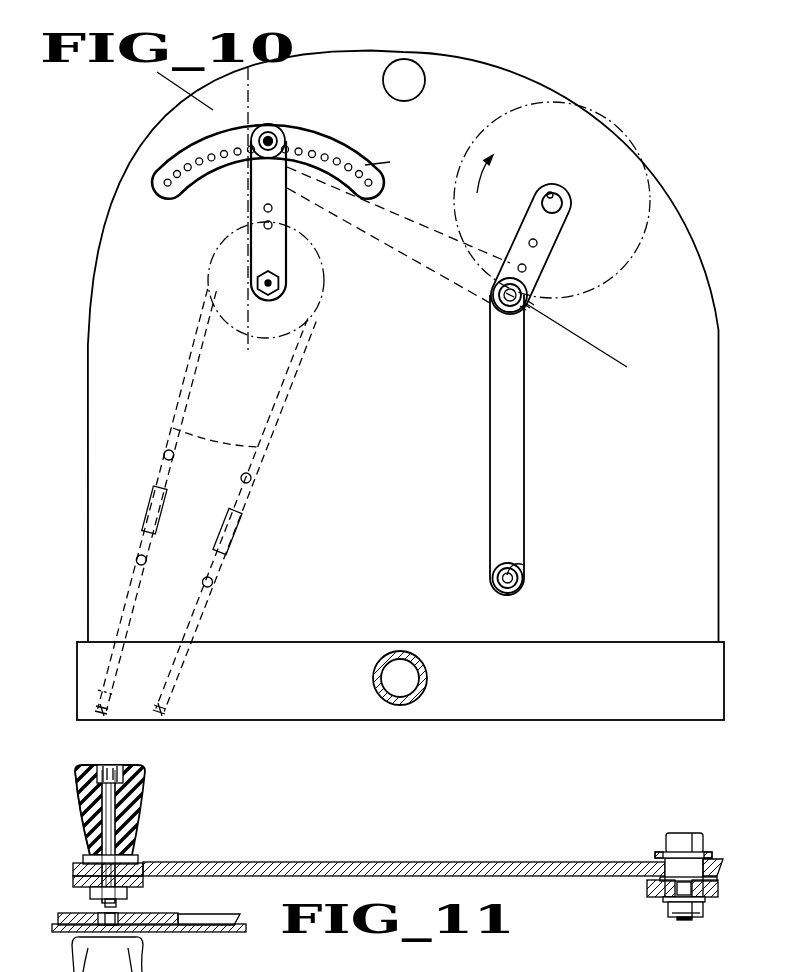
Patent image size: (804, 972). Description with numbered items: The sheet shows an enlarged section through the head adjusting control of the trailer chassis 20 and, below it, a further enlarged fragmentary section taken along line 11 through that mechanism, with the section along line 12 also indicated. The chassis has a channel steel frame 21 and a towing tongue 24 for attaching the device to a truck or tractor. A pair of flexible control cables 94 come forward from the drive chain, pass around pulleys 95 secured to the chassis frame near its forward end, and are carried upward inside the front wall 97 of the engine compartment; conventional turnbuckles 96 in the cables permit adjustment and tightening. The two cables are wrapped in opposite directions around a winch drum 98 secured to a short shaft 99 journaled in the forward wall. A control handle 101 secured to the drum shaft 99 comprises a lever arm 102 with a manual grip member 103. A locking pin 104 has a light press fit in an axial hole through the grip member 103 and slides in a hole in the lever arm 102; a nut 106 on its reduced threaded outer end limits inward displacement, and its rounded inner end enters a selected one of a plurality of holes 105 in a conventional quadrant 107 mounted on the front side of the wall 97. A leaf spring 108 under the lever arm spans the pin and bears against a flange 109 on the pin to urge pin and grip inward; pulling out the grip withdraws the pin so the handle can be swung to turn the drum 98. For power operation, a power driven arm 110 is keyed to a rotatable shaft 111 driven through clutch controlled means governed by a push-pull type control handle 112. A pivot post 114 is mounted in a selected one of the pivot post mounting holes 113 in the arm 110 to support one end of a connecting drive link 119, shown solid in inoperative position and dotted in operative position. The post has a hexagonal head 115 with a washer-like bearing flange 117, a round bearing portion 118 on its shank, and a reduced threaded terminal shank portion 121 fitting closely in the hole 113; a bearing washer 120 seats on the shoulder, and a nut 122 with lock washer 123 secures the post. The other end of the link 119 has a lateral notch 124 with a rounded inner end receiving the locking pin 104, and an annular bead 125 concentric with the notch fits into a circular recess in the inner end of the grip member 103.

In FIG. 10, the section line 11— 11 is at (183, 96).
In FIG. 10, the section line 12— 12 is at (238, 73).
In FIG. 10, the trailer chassis 20 is at (371, 404).
In FIG. 10, the channel steel frame 21 is at (657, 690).
In FIG. 10, the towing tongue 24 is at (372, 681).
In FIG. 10, the flexible control cables 94 is at (173, 417).
In FIG. 10, the pulleys 95 is at (160, 693).
In FIG. 10, the turnbuckles 96 is at (208, 518).
In FIG. 10, the front wall of the engine compartment 97 is at (388, 552).
In FIG. 11, the front wall of the engine compartment 97 is at (198, 930).
In FIG. 10, the winch drum 98 is at (207, 274).
In FIG. 10, the short shaft 99 is at (256, 286).
In FIG. 10, the control handle 101 is at (255, 166).
In FIG. 11, the control handle 101 is at (75, 824).
In FIG. 10, the lever arm 102 is at (263, 236).
In FIG. 11, the lever arm 102 is at (148, 880).
In FIG. 10, the manual grip member 103 is at (273, 127).
In FIG. 11, the manual grip member 103 is at (140, 792).
In FIG. 11, the locking pin 104 is at (103, 905).
In FIG. 10, the holes 105 is at (165, 180).
In FIG. 11, the holes 105 is at (110, 918).
In FIG. 11, the nut 106 is at (118, 768).
In FIG. 10, the quadrant 107 is at (395, 162).
In FIG. 11, the quadrant 107 is at (218, 918).
In FIG. 11, the leaf spring 108 is at (75, 868).
In FIG. 11, the flange 109 is at (93, 893).
In FIG. 10, the power driven arm 110 is at (552, 236).
In FIG. 11, the power driven arm 110 is at (650, 886).
In FIG. 10, the rotatable shaft 111 is at (562, 203).
In FIG. 10, the push-pull type control handle 112 is at (404, 72).
In FIG. 10, the pivot post mounting holes 113 is at (536, 246).
In FIG. 11, the pivot post mounting holes 113 is at (715, 896).
In FIG. 10, the pivot post 114 is at (528, 304).
In FIG. 11, the pivot post 114 is at (685, 835).
In FIG. 11, the hexagonal head 115 is at (668, 842).
In FIG. 11, the bearing flange 117 is at (705, 855).
In FIG. 11, the bearing portion 118 is at (683, 869).
In FIG. 10, the connecting drive link 119 is at (497, 480).
In FIG. 11, the connecting drive link 119 is at (468, 838).
In FIG. 11, the bearing washer 120 is at (716, 880).
In FIG. 11, the threaded terminal shank portion 121 is at (682, 918).
In FIG. 11, the nut 122 is at (702, 912).
In FIG. 11, the lock washer 123 is at (662, 900).
In FIG. 10, the notch 124 is at (520, 578).
In FIG. 11, the notch 124 is at (125, 870).
In FIG. 10, the annular bead 125 is at (520, 562).
In FIG. 11, the annular bead 125 is at (85, 855).